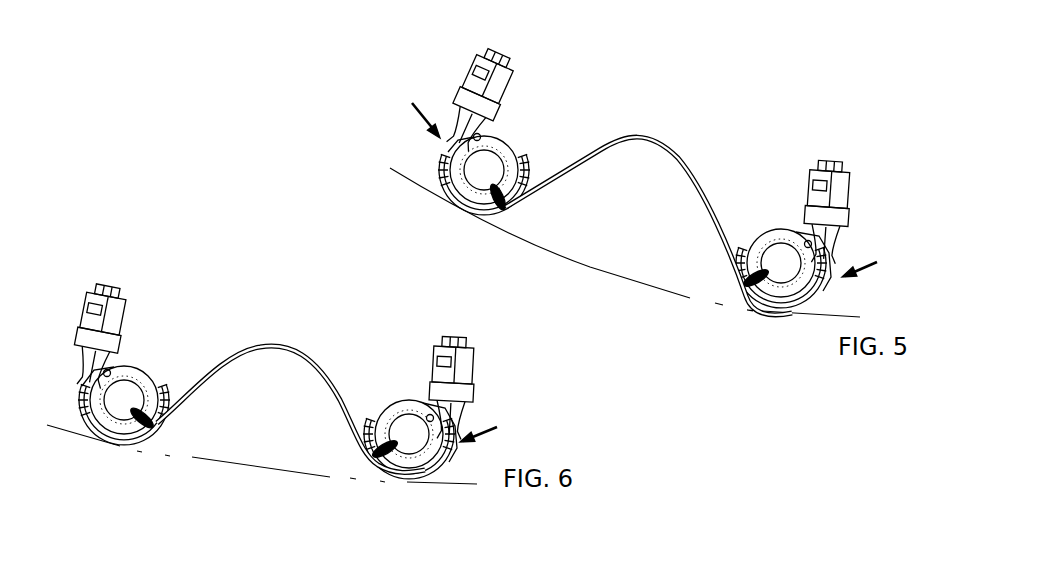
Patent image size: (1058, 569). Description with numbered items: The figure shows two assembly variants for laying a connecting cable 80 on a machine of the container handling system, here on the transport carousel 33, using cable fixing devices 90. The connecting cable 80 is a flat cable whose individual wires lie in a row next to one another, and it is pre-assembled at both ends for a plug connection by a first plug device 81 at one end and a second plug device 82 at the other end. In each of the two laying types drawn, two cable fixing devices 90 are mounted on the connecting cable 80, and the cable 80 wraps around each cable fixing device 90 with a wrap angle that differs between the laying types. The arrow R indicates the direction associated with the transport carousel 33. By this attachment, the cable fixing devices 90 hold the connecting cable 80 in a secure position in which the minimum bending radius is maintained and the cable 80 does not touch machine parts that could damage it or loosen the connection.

In FIG. 5, the transport carousel 33 is at (402, 170).
In FIG. 6, the transport carousel 33 is at (235, 463).
In FIG. 5, the connecting cable 80 is at (662, 148).
In FIG. 6, the connecting cable 80 is at (258, 348).
In FIG. 5, the first plug device 81 is at (512, 63).
In FIG. 6, the first plug device 81 is at (118, 313).
In FIG. 5, the second plug device 82 is at (847, 175).
In FIG. 6, the second plug device 82 is at (468, 362).
In FIG. 5, the cable fixing device 90 is at (517, 160).
In FIG. 6, the cable fixing device 90 is at (142, 373).
In FIG. 5, the direction of rotation R is at (650, 178).
In FIG. 6, the direction of rotation R is at (491, 427).